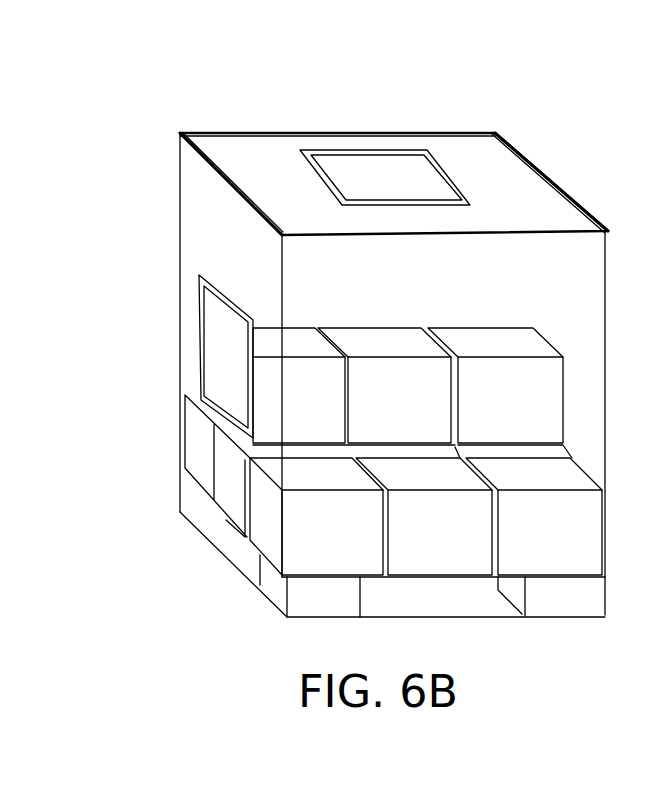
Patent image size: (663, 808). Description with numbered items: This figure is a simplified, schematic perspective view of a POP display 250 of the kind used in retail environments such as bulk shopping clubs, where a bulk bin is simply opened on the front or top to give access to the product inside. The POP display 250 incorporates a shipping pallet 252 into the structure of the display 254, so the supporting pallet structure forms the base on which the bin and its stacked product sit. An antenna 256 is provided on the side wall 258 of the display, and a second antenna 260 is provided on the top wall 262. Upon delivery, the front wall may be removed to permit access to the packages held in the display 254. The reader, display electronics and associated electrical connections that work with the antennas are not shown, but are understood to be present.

The POP display 250 is at (296, 90).
The shipping pallet 252 is at (233, 550).
The display 254 is at (166, 311).
The antenna 256 is at (198, 282).
The side wall 258 is at (195, 180).
The antenna 260 is at (390, 153).
The top wall 262 is at (490, 143).